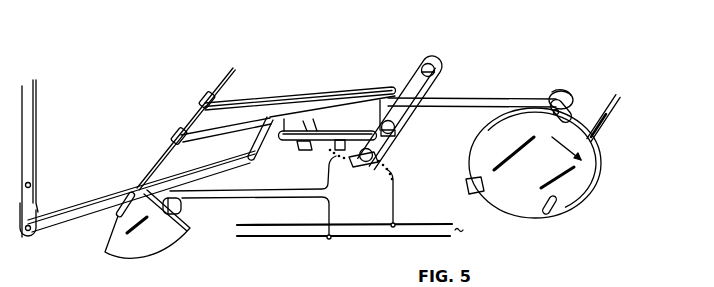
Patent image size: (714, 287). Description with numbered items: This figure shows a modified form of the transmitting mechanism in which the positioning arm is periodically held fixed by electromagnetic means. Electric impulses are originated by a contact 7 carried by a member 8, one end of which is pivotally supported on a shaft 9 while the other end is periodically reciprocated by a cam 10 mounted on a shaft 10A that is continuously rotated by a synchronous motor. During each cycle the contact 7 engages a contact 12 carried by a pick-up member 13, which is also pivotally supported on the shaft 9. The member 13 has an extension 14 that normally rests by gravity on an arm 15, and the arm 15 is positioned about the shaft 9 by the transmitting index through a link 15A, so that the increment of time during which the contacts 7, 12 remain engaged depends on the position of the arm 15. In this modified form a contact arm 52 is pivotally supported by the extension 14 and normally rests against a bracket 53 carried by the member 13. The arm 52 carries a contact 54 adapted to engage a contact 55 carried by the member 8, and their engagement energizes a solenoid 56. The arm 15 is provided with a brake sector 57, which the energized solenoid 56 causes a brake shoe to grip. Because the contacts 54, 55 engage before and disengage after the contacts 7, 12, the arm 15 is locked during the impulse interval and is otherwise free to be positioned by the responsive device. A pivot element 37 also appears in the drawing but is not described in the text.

The contact 7 is at (397, 127).
The member 8 is at (506, 99).
The shaft 9 is at (218, 73).
The cam 10 is at (602, 188).
The shaft 10A is at (606, 122).
The contact 12 is at (380, 111).
The pick-up member 13 is at (373, 91).
The extension 14 is at (253, 141).
The arm 15 is at (222, 167).
The link 15A is at (38, 127).
The pivot bolt 37 is at (433, 62).
The contact arm 52 is at (330, 143).
The bracket 53 is at (300, 148).
The contact 54 is at (375, 152).
The contact 55 is at (376, 173).
The solenoid 56 is at (184, 209).
The brake sector 57 is at (167, 252).